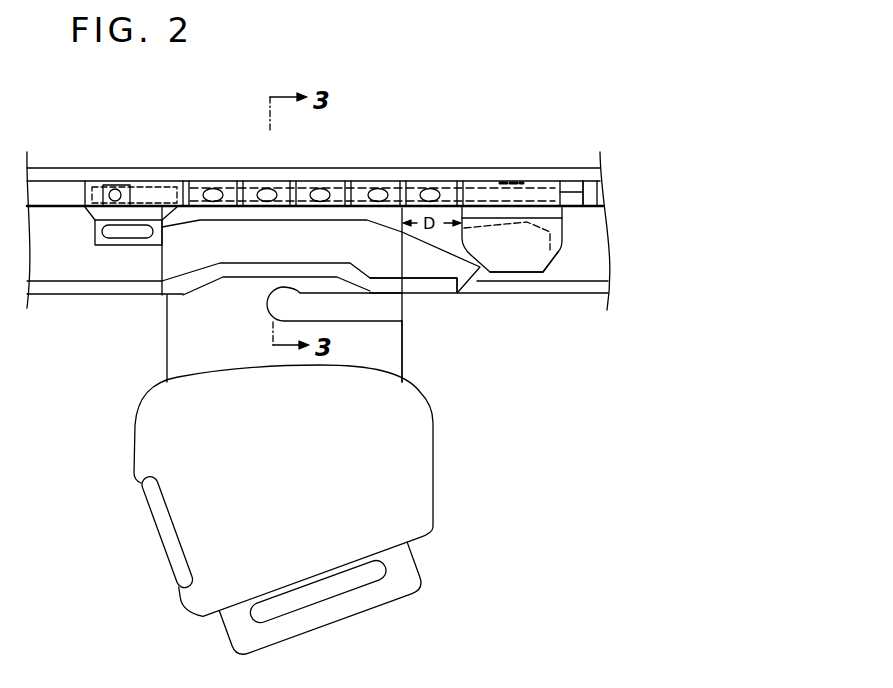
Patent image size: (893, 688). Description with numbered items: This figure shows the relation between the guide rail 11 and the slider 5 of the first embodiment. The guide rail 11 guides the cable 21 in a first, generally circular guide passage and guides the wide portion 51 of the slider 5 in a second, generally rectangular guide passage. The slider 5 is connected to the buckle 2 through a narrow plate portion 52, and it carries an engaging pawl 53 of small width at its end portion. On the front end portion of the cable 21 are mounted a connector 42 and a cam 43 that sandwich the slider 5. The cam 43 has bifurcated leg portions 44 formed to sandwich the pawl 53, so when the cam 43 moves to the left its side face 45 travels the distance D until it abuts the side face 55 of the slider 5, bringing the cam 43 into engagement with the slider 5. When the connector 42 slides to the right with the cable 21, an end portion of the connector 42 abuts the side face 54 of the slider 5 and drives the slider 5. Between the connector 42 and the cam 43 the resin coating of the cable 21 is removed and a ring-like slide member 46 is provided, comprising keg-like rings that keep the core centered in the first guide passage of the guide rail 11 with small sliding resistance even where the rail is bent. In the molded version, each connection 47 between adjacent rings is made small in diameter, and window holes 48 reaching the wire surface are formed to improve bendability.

The buckle 2 is at (398, 482).
The slider 5 is at (128, 341).
The guide rail 11 is at (70, 175).
The cable 21 is at (592, 192).
The connector 42 is at (142, 212).
The cam 43 is at (483, 207).
The bifurcated leg portions 44 is at (518, 257).
The side face 45 is at (457, 243).
The ring-like slide member 46 is at (335, 185).
The connection 47 is at (400, 205).
The window holes 48 is at (265, 187).
The wide portion 51 is at (180, 262).
The narrow plate portion 52 is at (193, 343).
The engaging pawl 53 is at (445, 267).
The side face 54 is at (160, 258).
The side face 55 is at (405, 262).